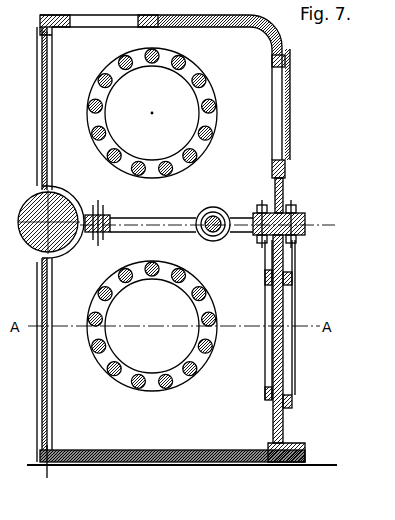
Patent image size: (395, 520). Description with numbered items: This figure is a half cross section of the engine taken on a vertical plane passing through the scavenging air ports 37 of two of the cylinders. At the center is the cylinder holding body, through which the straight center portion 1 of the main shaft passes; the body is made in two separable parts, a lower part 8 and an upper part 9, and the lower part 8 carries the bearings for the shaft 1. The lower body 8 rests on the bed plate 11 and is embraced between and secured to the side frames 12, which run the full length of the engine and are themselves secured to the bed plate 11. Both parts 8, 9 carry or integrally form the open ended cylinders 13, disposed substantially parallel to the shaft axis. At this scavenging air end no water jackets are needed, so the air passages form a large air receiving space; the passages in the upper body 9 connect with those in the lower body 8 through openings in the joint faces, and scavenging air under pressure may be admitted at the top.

The straight center portion of the main shaft 1 is at (33, 205).
The lower part of the cylinder holding body 8 is at (270, 262).
The upper part of the cylinder holding body 9 is at (282, 42).
The bed plate 11 is at (212, 464).
The side frames 12 is at (283, 245).
The open ended cylinders 13 is at (193, 375).
The scavenging air ports 37 is at (197, 83).